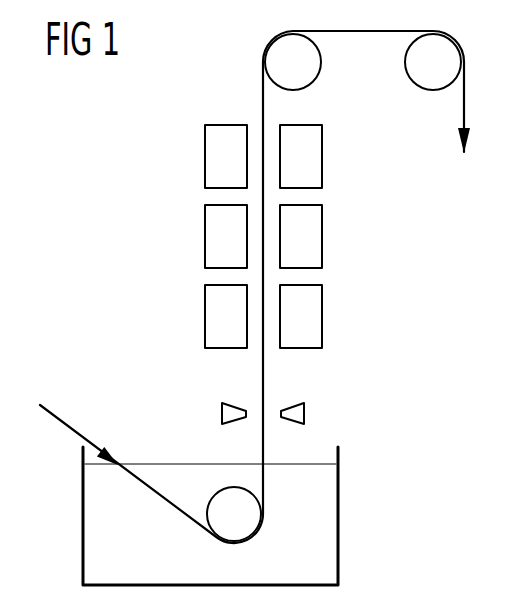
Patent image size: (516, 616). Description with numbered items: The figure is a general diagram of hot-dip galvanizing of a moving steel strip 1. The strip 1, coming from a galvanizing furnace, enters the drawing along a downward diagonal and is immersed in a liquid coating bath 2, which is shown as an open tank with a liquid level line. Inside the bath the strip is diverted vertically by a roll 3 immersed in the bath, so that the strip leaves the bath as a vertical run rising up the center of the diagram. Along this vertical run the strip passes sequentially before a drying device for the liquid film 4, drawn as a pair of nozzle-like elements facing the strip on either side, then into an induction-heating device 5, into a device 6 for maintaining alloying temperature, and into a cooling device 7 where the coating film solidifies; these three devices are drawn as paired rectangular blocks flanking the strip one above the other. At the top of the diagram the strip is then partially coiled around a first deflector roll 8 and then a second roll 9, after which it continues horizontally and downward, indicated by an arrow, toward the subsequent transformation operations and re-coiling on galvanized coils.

The moving steel strip 1 is at (63, 420).
The liquid coating bath 2 is at (340, 505).
The roll 3 is at (212, 500).
The drying device for the liquid film 4 is at (220, 413).
The induction-heating device 5 is at (205, 313).
The device for maintaining alloying temperature 6 is at (205, 233).
The cooling device 7 is at (205, 153).
The first deflector roll 8 is at (309, 60).
The second roll 9 is at (434, 87).